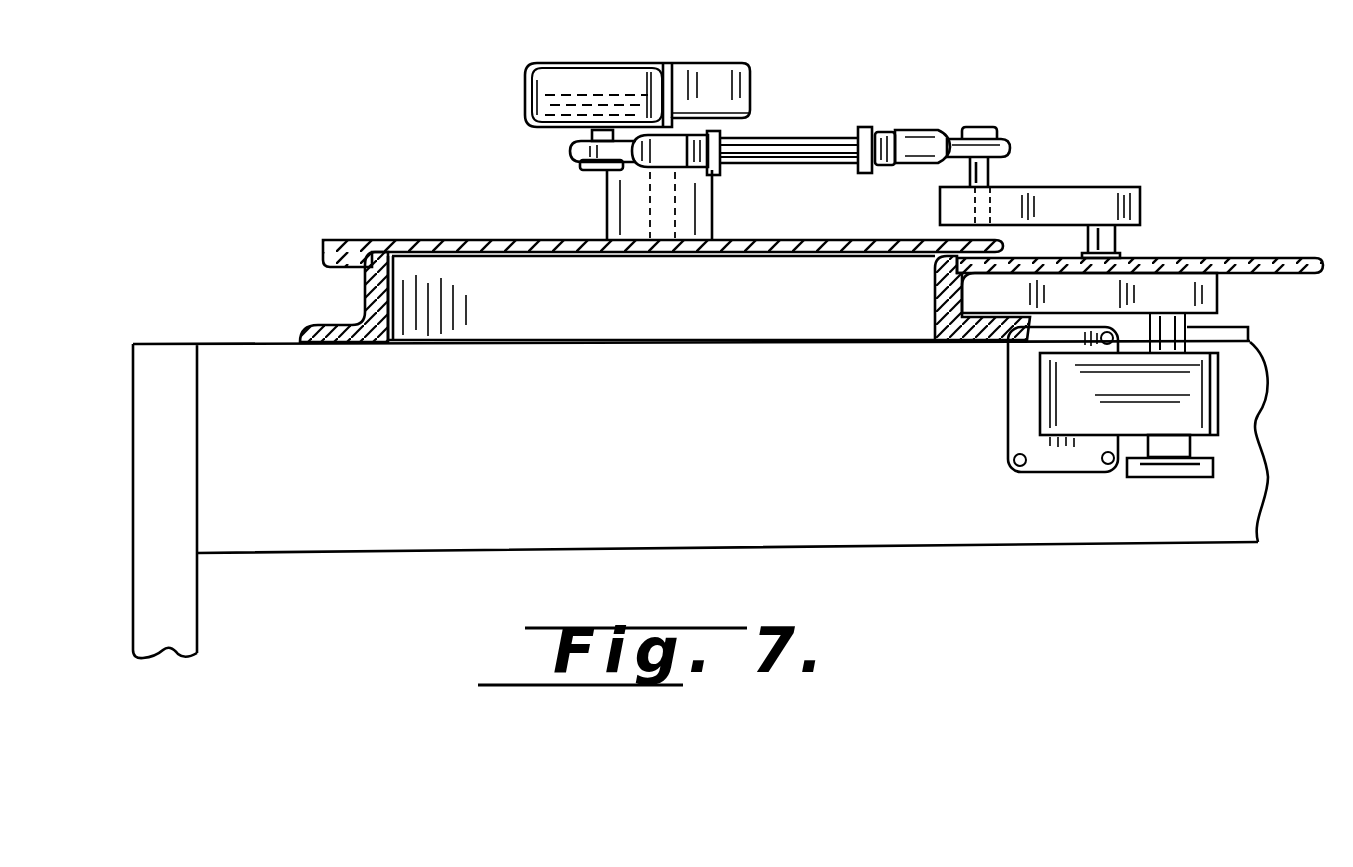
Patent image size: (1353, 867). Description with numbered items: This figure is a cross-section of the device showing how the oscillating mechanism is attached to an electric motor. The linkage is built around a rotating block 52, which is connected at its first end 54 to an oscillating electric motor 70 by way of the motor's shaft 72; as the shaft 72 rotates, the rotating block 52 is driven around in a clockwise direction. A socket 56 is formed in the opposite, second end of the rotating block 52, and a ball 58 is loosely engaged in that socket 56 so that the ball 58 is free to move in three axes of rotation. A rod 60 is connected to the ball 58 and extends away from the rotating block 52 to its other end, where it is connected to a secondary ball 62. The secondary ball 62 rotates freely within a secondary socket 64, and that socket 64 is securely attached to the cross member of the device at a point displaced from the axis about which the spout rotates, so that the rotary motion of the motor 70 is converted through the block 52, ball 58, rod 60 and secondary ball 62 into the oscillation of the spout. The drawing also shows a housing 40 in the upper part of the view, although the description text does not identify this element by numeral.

The housing 40 is at (748, 88).
The rotating block 52 is at (1070, 186).
The first end 54 is at (1140, 203).
The socket 56 is at (1017, 148).
The ball 58 is at (983, 130).
The rod 60 is at (840, 140).
The secondary ball 62 is at (598, 136).
The secondary socket 64 is at (568, 162).
The oscillating electric motor 70 is at (1087, 410).
The shaft 72 is at (1250, 343).